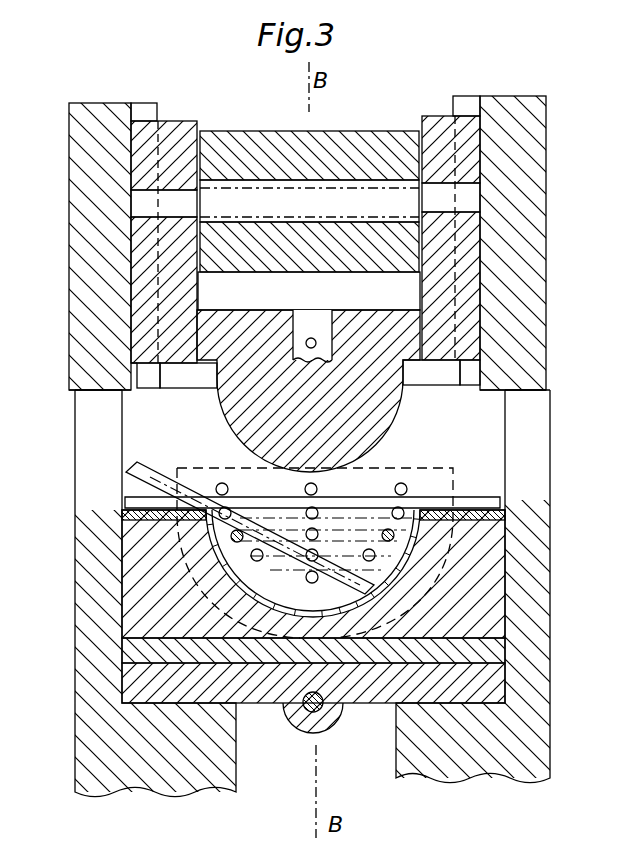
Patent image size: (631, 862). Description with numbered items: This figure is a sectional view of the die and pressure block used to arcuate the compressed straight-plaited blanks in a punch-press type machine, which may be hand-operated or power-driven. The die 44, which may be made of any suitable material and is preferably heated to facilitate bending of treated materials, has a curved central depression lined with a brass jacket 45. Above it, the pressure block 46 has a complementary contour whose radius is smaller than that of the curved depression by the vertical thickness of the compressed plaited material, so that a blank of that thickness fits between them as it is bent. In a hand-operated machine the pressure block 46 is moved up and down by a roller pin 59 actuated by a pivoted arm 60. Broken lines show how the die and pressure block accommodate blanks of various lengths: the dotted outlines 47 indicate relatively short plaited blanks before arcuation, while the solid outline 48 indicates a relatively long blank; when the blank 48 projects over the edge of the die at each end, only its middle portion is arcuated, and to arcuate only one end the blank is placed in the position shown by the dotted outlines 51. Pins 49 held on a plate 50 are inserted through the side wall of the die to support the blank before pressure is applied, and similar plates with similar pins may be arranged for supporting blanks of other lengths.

The die 44 is at (180, 598).
The brass jacket 45 is at (342, 608).
The pressure block 46 is at (383, 413).
The dotted outlines 47 is at (262, 565).
The plaited blank 48 is at (386, 498).
The pins 49 is at (183, 537).
The plate 50 is at (330, 712).
The dotted outlines 51 is at (160, 468).
The roller pin 59 is at (372, 200).
The arm 60 is at (355, 130).